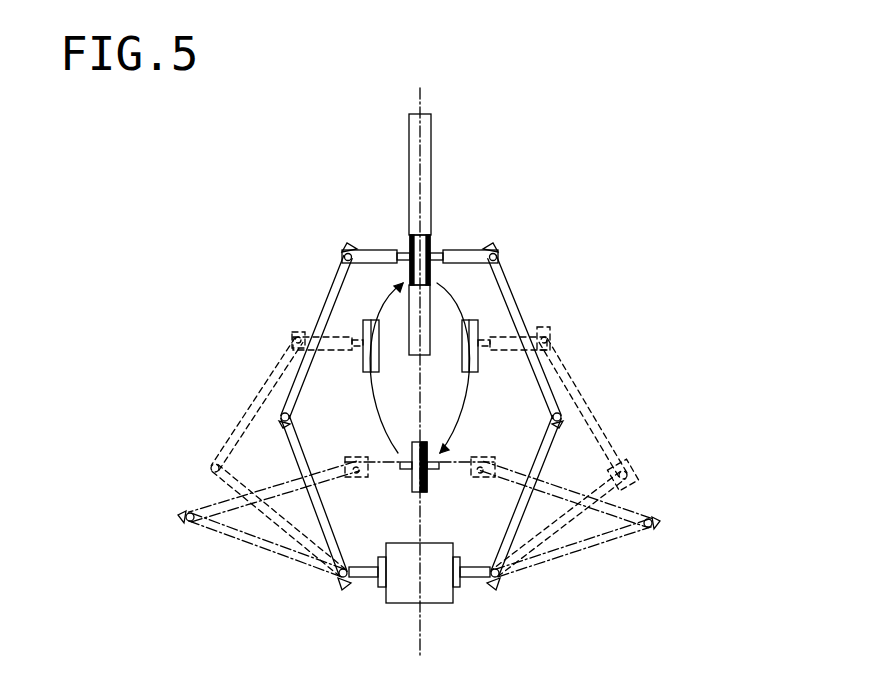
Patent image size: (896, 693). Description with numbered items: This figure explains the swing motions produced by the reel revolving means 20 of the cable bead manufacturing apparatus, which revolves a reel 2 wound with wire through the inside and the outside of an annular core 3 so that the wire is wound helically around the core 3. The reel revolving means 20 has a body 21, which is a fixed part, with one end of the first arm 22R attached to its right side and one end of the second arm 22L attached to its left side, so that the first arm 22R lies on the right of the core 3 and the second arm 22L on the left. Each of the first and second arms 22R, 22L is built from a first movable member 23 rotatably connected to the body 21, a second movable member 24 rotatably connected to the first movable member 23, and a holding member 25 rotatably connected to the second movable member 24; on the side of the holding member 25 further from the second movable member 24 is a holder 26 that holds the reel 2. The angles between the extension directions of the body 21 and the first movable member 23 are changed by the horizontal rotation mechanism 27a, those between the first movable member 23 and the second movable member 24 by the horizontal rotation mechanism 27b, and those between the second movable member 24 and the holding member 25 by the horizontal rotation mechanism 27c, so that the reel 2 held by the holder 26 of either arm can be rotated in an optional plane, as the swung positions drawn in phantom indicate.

The reel 2 is at (360, 325).
The annular core 3 is at (432, 157).
The reel revolving means 20 is at (417, 371).
The body 21 is at (430, 590).
The second arm 22L is at (290, 390).
The first arm 22R is at (547, 387).
The first movable member 23 is at (292, 452).
The second movable member 24 is at (320, 333).
The holding member 25 is at (380, 257).
The holder 26 is at (407, 253).
The horizontal rotation mechanism 27a is at (338, 575).
The horizontal rotation mechanism 27b is at (283, 415).
The horizontal rotation mechanism 27c is at (345, 252).